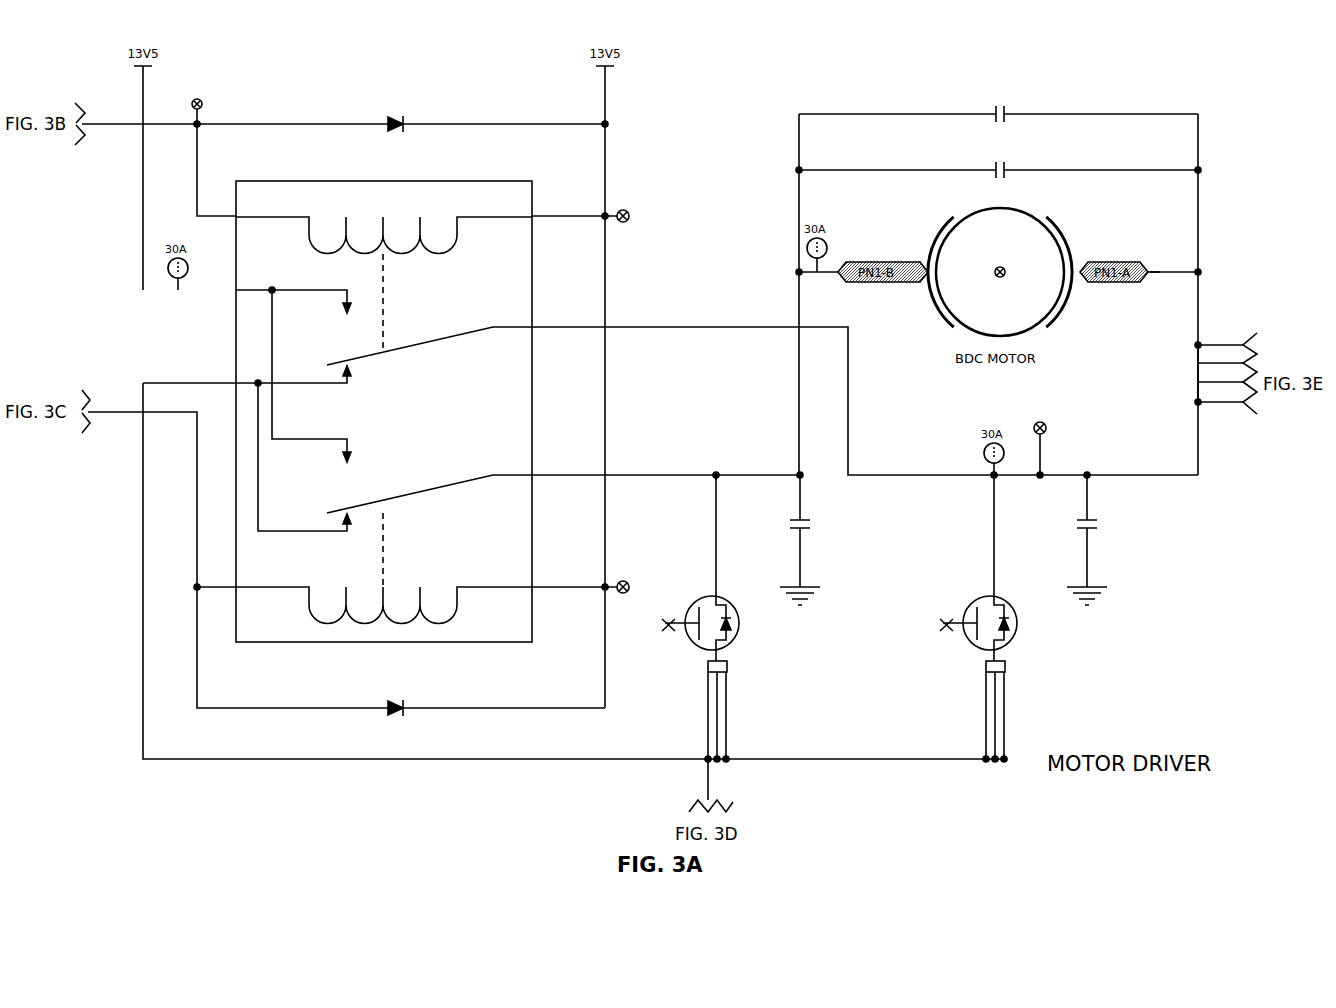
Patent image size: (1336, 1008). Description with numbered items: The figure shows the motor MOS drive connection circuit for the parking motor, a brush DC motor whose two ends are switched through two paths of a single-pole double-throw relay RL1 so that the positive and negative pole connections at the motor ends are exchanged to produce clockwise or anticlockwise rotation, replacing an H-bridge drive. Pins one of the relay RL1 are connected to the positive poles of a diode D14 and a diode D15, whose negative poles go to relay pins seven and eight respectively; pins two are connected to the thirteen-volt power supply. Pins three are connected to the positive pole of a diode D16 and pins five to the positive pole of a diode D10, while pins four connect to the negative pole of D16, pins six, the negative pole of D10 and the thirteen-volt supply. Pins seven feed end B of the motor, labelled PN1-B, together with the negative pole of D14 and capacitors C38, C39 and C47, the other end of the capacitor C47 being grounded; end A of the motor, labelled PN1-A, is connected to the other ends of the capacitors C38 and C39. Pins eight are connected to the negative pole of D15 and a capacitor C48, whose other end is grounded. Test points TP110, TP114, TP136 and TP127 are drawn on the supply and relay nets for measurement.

The single-pole double-throw relay RL1 is at (383, 413).
The diode D10 is at (424, 123).
The diode D16 is at (448, 706).
The diode D14 is at (740, 617).
The diode D15 is at (1018, 617).
The capacitor C38 is at (1053, 113).
The capacitor C39 is at (1049, 170).
The capacitor C47 is at (843, 549).
The capacitor C48 is at (1130, 548).
The test point TP110 is at (202, 102).
The test point TP114 is at (644, 217).
The test point TP136 is at (644, 588).
The test point TP127 is at (1042, 440).
The motor net A PN1-A is at (1168, 263).
The motor net B PN1-B is at (699, 469).